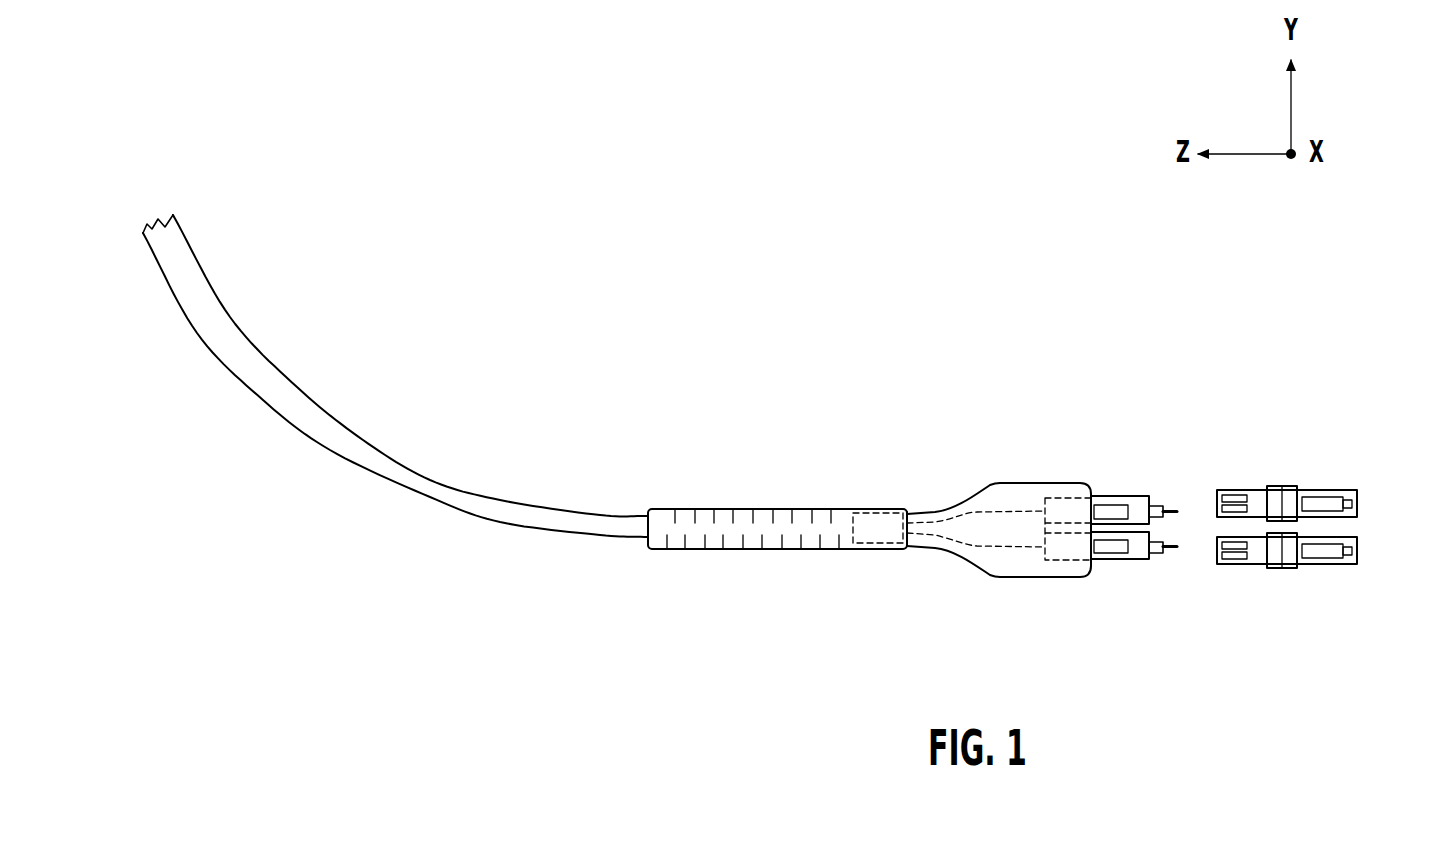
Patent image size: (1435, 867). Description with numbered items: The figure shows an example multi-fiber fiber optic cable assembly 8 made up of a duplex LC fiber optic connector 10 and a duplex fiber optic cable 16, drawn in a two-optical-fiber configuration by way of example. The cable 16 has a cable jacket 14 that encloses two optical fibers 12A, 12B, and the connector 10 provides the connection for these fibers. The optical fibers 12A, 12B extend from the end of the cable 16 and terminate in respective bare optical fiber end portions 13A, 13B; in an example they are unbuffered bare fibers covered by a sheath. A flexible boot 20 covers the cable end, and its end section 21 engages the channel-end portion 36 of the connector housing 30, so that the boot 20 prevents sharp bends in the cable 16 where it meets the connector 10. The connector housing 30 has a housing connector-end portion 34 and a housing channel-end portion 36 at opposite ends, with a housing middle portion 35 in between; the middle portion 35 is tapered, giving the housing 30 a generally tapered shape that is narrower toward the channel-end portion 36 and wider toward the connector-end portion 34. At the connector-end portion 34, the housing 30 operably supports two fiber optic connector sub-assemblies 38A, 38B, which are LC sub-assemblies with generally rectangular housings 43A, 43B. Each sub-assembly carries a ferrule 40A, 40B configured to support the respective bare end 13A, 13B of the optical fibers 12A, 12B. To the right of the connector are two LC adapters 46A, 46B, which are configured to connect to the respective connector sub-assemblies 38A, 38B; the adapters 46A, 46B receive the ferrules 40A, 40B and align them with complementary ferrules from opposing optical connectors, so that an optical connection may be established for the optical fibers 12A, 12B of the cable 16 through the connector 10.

The multi-fiber fiber optic cable assembly 8 is at (553, 163).
The duplex LC fiber optic connector 10 is at (1065, 330).
The optical fiber 12A is at (957, 512).
The optical fiber 12B is at (955, 556).
The bare optical fiber end portion 13A is at (1168, 508).
The bare optical fiber end portion 13B is at (1170, 552).
The cable jacket 14 is at (357, 455).
The duplex fiber optic cable 16 is at (305, 400).
The flexible boot 20 is at (722, 508).
The end section 21 is at (873, 553).
The connector housing 30 is at (1012, 483).
The housing connector-end portion 34 is at (1068, 580).
The housing middle portion 35 is at (945, 553).
The housing channel-end portion 36 is at (880, 524).
The fiber optic connector sub-assembly 38A is at (1123, 480).
The fiber optic connector sub-assembly 38B is at (1115, 582).
The ferrule 40A is at (1158, 505).
The ferrule 40B is at (1150, 556).
The rectangular housing 43A is at (1100, 497).
The rectangular housing 43B is at (1127, 560).
The LC adapter 46A is at (1315, 487).
The LC adapter 46B is at (1322, 567).